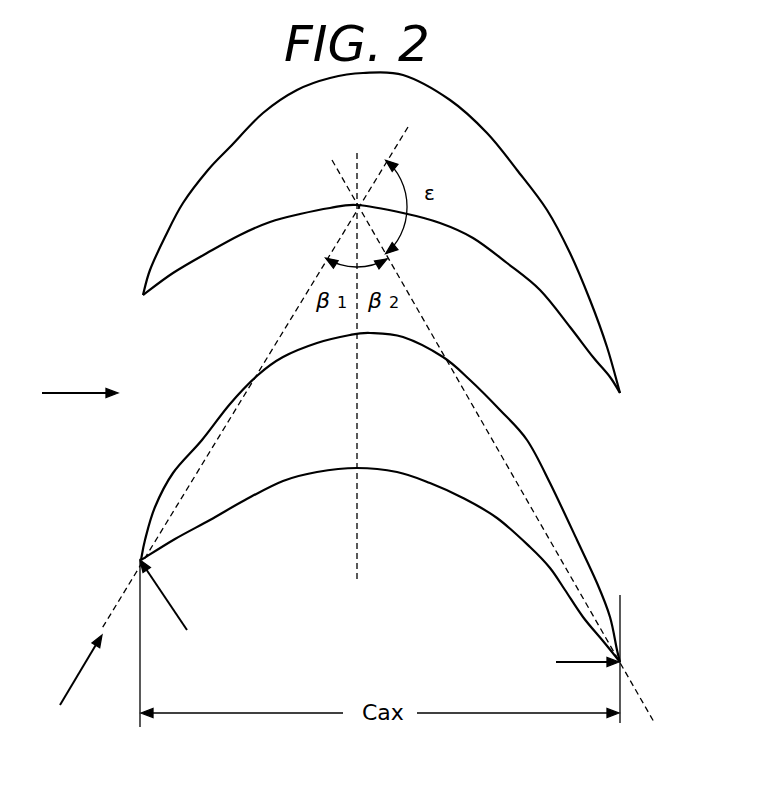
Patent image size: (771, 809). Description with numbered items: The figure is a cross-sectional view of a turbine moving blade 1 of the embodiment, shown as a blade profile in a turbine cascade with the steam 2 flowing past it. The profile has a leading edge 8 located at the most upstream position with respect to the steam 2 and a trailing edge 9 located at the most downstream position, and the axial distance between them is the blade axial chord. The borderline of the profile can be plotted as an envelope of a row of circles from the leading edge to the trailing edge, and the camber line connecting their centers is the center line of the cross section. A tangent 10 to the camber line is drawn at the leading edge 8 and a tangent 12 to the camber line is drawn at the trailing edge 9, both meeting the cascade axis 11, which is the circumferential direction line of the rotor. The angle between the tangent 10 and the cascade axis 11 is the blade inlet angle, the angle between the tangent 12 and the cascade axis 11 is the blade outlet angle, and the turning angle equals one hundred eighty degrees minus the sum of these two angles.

The moving blade 1 is at (567, 530).
The steam 2 is at (70, 392).
The leading edge 8 is at (180, 615).
The trailing edge 9 is at (557, 661).
The tangent to a camber line at the leading edge 10 is at (78, 667).
The cascade axis 11 is at (353, 567).
The tangent to a camber line at the trailing edge 12 is at (647, 707).